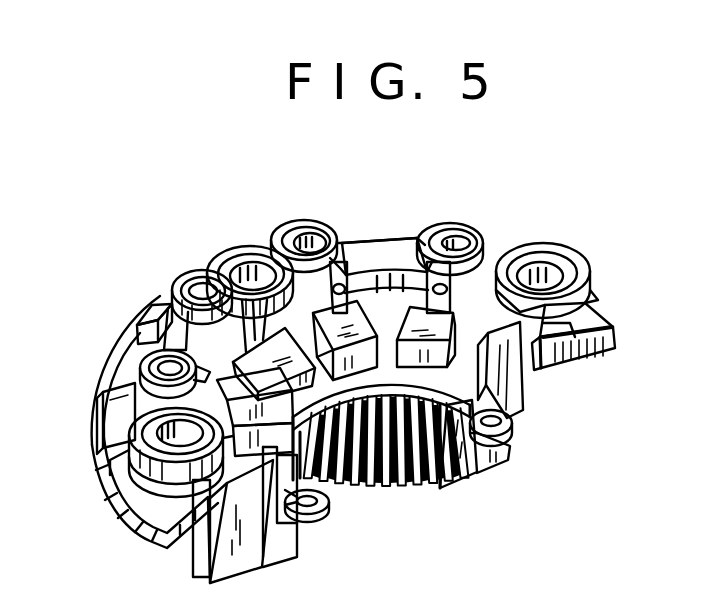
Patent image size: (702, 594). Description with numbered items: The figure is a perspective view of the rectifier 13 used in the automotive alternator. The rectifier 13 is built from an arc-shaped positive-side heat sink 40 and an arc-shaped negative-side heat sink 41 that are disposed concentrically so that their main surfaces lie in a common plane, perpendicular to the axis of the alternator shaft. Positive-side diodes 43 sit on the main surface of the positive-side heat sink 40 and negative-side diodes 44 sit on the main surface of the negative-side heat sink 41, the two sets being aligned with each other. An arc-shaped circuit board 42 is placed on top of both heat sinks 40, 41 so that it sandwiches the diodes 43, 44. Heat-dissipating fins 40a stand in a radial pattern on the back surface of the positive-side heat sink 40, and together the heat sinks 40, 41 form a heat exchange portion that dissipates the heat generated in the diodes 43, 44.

The rectifier 13 is at (412, 200).
The positive-side heat sink 40 is at (389, 392).
The heat-dissipating fins 40a is at (457, 472).
The negative-side heat sink 41 is at (112, 463).
The circuit board 42 is at (402, 252).
The positive-side diodes 43 is at (351, 323).
The negative-side diodes 44 is at (157, 310).